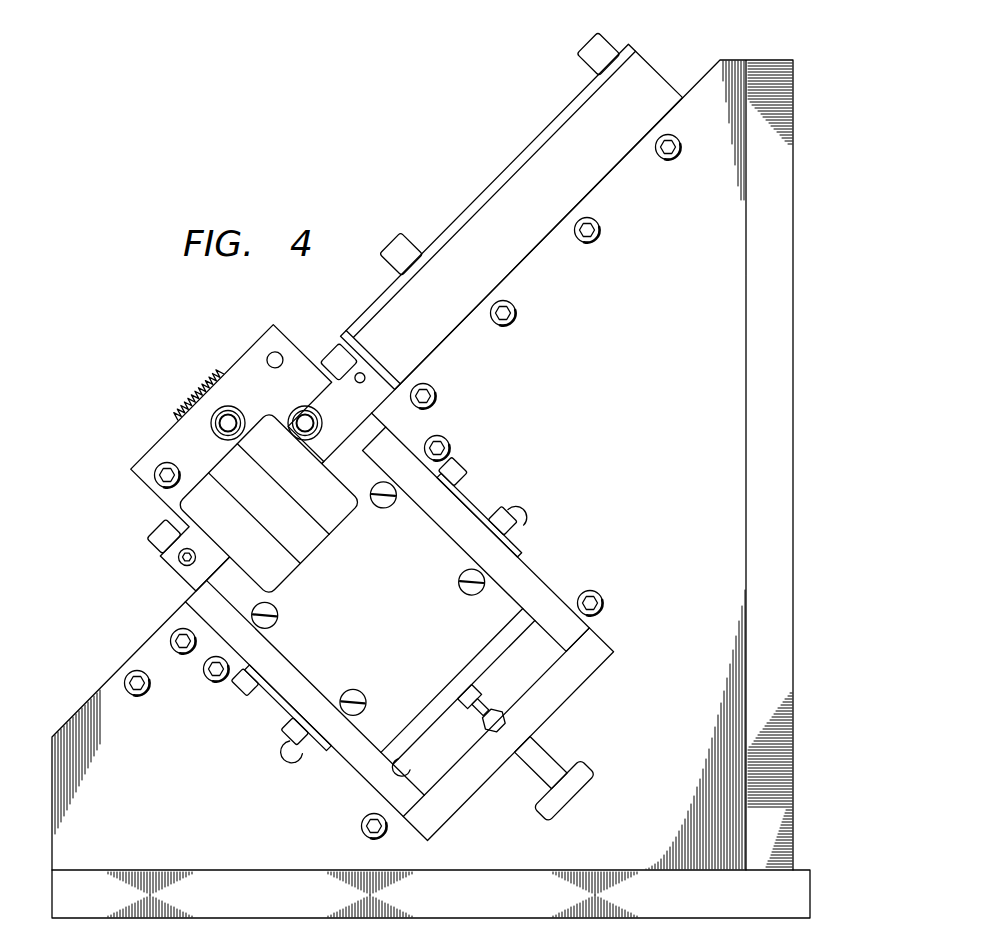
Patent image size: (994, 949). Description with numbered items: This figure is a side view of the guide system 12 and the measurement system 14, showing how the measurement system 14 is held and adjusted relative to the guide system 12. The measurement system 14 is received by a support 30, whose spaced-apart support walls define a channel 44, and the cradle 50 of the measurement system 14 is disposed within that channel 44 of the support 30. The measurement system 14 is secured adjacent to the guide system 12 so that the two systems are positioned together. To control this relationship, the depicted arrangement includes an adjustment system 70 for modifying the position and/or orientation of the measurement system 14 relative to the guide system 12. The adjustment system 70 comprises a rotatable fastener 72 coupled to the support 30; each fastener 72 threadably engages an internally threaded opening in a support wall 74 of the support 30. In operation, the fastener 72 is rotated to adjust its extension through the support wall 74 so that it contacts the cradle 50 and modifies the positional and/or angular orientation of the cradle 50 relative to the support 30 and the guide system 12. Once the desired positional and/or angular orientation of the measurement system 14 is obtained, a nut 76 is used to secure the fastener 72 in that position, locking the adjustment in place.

The guide system 12 is at (637, 50).
The measurement system 14 is at (180, 490).
The support 30 is at (793, 256).
The channel 44 is at (443, 762).
The cradle 50 is at (395, 762).
The adjustment system 70 is at (583, 796).
The rotatable fastener 72 is at (590, 792).
The support wall 74 is at (572, 714).
The nut 76 is at (494, 702).